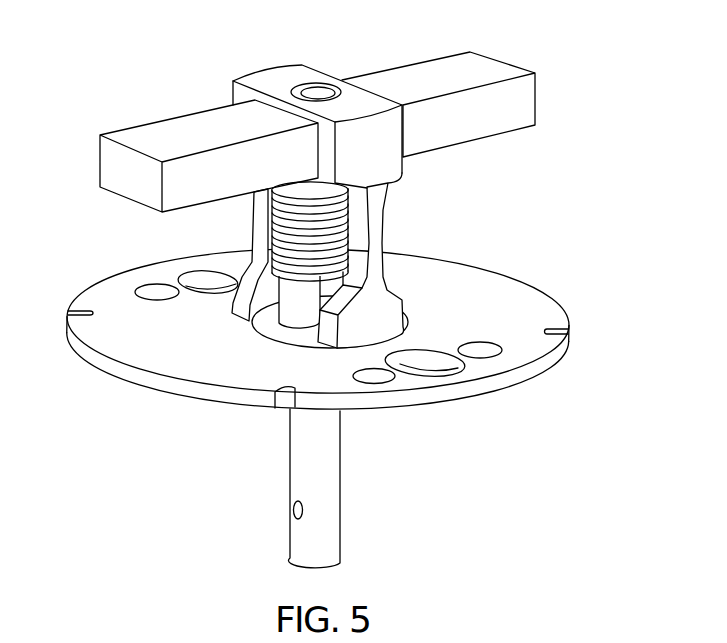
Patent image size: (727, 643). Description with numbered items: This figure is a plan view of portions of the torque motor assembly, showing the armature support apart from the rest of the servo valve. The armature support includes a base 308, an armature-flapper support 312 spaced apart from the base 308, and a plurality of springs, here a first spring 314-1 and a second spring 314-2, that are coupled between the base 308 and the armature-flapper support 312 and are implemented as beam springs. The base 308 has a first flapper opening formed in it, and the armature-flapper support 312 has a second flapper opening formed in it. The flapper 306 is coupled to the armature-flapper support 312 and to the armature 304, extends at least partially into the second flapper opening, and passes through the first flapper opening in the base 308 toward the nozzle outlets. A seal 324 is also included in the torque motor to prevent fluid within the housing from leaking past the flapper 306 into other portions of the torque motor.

The armature 304 is at (532, 102).
The flapper 306 is at (341, 465).
The base 308 is at (540, 294).
The armature-flapper support 312 is at (284, 73).
The first spring 314-1 is at (255, 212).
The second spring 314-2 is at (377, 222).
The seal 324 is at (288, 257).